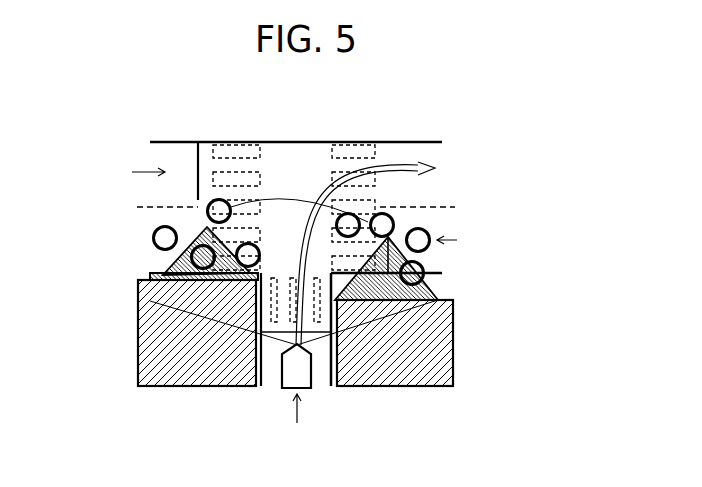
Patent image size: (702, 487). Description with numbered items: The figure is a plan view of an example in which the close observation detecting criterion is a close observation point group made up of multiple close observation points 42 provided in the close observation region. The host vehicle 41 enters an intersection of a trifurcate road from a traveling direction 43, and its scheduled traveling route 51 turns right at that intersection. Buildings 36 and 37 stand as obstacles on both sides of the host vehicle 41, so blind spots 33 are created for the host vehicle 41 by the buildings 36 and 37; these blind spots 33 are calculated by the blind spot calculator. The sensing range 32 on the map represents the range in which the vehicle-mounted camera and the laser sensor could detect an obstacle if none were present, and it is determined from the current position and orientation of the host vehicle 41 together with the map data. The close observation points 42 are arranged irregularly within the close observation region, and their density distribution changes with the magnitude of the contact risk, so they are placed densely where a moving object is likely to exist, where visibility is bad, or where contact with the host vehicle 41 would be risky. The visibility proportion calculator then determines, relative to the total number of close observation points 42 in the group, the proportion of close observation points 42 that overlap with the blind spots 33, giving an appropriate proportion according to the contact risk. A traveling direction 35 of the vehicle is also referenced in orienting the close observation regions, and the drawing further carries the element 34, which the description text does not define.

The sensing range 32 is at (299, 199).
The blind spot 33 is at (172, 266).
The air flow 34 is at (140, 171).
The traveling direction 35 is at (447, 241).
The building 36 is at (453, 345).
The building 37 is at (138, 339).
The host vehicle 41 is at (303, 392).
The close observation point 42 is at (153, 239).
The traveling direction 43 is at (293, 414).
The scheduled traveling route 51 is at (407, 166).